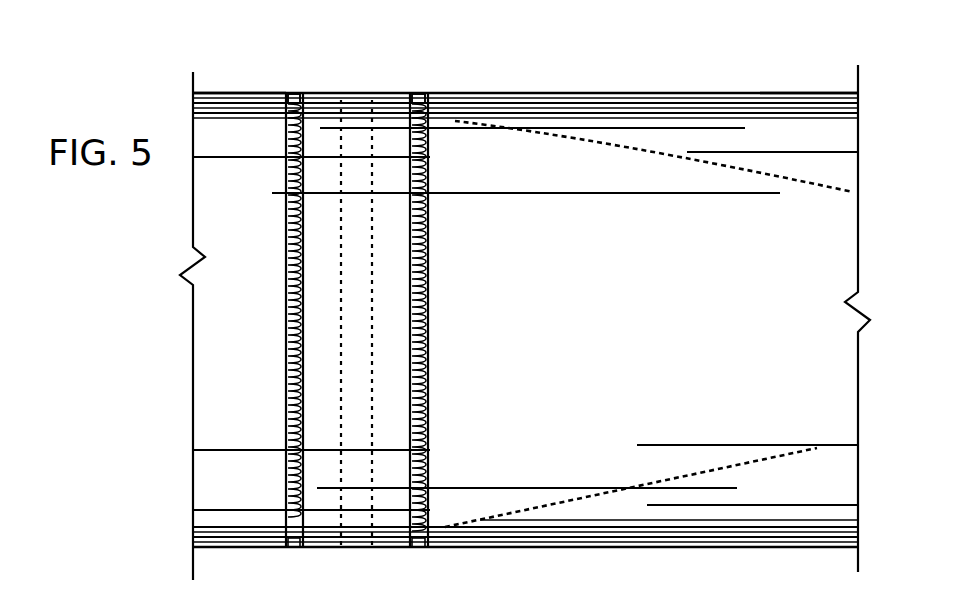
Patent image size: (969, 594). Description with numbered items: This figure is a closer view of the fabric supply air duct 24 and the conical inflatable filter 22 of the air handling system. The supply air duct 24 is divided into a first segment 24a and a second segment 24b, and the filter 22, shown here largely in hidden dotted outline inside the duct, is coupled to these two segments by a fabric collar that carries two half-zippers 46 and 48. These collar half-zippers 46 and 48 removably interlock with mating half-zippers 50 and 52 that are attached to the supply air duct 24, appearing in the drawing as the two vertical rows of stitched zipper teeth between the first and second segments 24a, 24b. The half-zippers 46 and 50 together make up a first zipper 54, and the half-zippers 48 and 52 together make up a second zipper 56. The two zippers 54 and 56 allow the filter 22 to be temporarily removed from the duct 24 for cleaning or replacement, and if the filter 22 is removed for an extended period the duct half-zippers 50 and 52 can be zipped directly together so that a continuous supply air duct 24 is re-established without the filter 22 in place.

The inflatable filter 22 is at (637, 148).
The supply air duct 24 is at (538, 92).
The first segment 24a is at (239, 93).
The second segment 24b is at (795, 92).
The half-zipper 46 is at (306, 313).
The half-zipper 48 is at (410, 305).
The half-zipper 50 is at (284, 343).
The half-zipper 52 is at (430, 332).
The first zipper 54 is at (296, 88).
The second zipper 56 is at (420, 88).